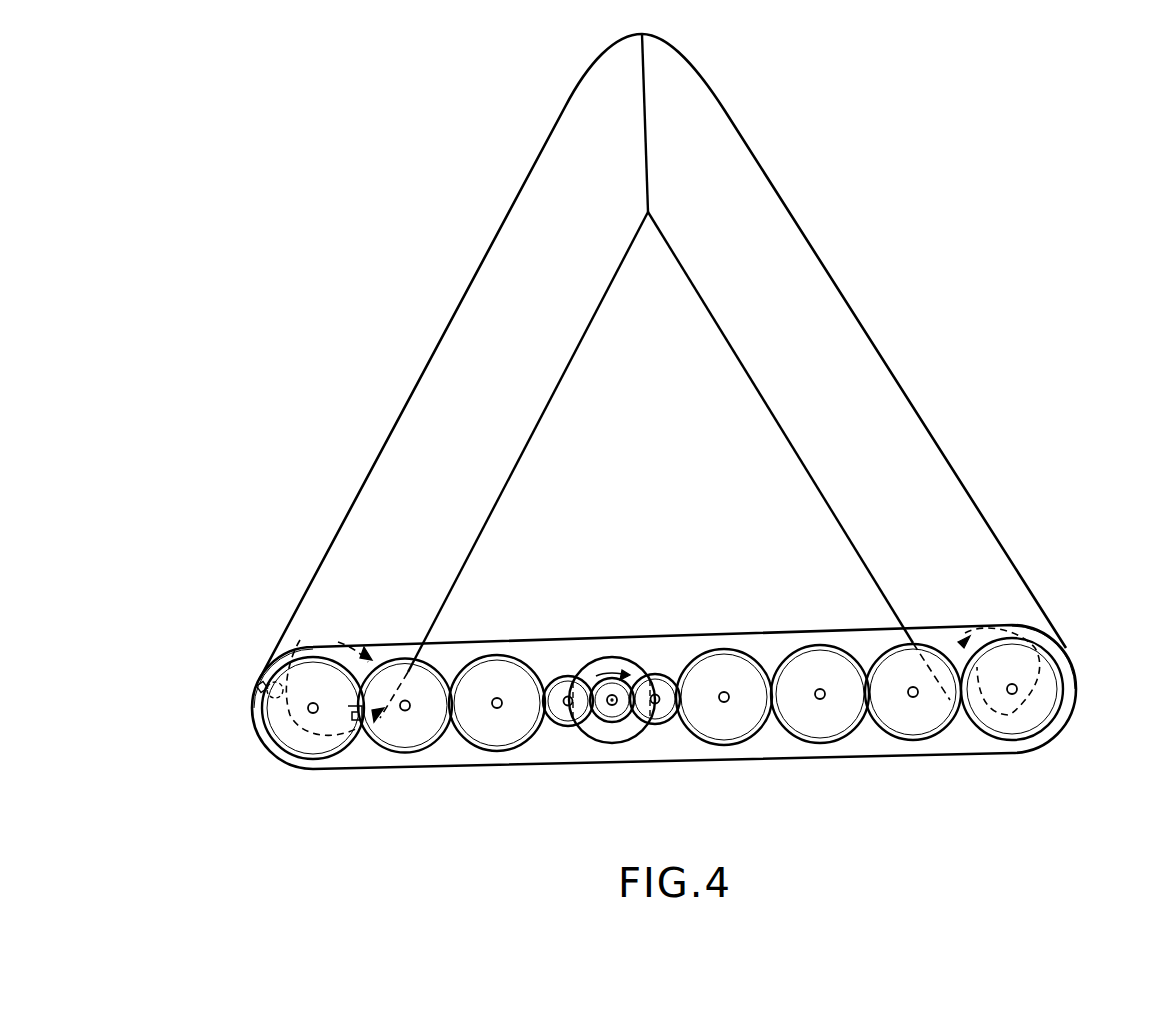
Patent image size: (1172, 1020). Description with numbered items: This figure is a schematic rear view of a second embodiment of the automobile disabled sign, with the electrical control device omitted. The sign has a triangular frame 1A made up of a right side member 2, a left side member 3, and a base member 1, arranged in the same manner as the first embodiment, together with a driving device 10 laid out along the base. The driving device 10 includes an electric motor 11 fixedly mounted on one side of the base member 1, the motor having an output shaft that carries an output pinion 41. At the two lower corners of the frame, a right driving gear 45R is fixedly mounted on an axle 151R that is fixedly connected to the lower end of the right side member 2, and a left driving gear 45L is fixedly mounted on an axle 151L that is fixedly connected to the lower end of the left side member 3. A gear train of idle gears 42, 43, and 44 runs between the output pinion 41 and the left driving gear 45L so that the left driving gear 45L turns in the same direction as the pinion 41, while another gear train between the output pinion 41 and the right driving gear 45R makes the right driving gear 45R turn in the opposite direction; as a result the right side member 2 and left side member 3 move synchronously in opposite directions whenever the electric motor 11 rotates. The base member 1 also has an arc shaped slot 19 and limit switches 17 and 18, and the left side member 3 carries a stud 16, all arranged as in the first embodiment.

The triangular frame 1A is at (815, 222).
The right side member 2 is at (855, 344).
The left side member 3 is at (436, 372).
The base member 1 is at (780, 748).
The driving device 10 is at (660, 663).
The electric motor 11 is at (627, 742).
The stud 16 is at (385, 748).
The limit switch 17 is at (264, 686).
The limit switch 18 is at (353, 735).
The arc shaped slot 19 is at (290, 648).
The output pinion 41 is at (605, 737).
The idle gear 42 is at (566, 728).
The idle gear 43 is at (501, 752).
The idle gear 44 is at (437, 752).
The left driving gear 45L is at (300, 768).
The right driving gear 45R is at (1018, 740).
The axle 151L is at (313, 712).
The axle 151R is at (1017, 692).